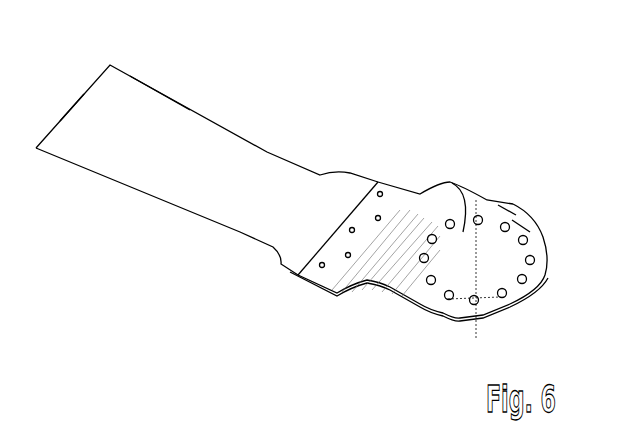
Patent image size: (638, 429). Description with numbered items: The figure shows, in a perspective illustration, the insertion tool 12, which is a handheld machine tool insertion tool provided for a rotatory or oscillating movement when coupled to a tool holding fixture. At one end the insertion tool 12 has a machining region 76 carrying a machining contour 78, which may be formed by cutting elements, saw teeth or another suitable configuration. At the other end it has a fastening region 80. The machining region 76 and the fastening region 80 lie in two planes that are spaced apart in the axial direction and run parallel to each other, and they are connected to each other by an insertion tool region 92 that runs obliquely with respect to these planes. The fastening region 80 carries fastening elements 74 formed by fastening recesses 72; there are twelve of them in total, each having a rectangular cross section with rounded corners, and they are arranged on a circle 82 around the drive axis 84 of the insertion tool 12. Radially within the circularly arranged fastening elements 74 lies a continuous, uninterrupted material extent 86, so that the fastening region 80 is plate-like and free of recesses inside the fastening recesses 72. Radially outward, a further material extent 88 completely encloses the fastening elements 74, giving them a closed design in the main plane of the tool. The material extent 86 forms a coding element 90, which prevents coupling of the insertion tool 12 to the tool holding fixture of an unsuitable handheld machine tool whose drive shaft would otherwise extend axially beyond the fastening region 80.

The insertion tool 12 is at (157, 184).
The machining region 76 is at (157, 102).
The machining contour 78 is at (70, 108).
The fastening region 80 is at (438, 304).
The circle 82 is at (540, 236).
The drive axis 84 is at (482, 184).
The material extent 86 is at (497, 280).
The further material extent 88 is at (532, 291).
The coding element 90 is at (452, 183).
The insertion tool region 92 is at (418, 198).
The fastening recesses 72 is at (507, 211).
The fastening elements 74 is at (522, 228).